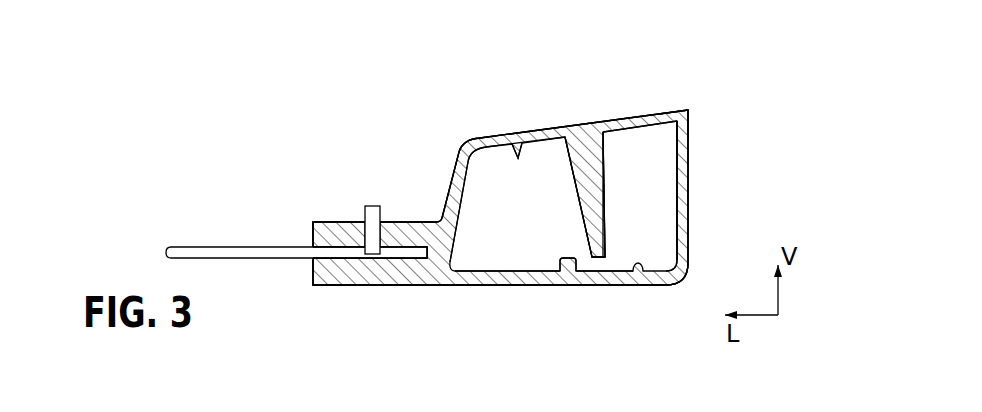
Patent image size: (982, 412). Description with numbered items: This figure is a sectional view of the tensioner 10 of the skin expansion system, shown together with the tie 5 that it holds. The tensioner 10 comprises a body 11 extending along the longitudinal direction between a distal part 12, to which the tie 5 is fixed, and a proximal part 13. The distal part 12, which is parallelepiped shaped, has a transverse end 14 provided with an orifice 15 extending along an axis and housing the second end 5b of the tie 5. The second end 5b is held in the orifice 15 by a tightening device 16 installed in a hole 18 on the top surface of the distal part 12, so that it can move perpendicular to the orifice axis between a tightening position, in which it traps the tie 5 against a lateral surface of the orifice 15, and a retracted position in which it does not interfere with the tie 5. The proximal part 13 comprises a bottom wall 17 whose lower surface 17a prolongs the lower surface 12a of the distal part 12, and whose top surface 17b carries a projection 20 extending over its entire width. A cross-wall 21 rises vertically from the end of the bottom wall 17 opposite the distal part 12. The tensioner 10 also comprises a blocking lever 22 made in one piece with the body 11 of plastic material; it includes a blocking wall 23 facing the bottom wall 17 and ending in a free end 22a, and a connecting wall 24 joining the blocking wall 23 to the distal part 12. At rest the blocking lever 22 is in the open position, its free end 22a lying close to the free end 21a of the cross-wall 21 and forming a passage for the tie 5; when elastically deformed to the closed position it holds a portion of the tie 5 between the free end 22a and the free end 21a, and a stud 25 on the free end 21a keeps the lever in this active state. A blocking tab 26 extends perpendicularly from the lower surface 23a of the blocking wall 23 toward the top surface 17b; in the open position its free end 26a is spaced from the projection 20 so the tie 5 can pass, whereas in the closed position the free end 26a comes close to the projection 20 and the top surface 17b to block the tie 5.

The tie 5 is at (198, 242).
The second end of the tie 5b is at (398, 254).
The tensioner 10 is at (530, 117).
The body 11 is at (480, 308).
The distal part 12 is at (325, 220).
The lower surface of the distal part 12a is at (372, 286).
The proximal part 13 is at (577, 288).
The transverse end 14 is at (312, 278).
The orifice 15 is at (336, 259).
The tightening device 16 is at (374, 206).
The bottom wall 17 is at (518, 288).
The lower surface of the bottom wall 17a is at (621, 286).
The top surface of the bottom wall 17b is at (646, 283).
The hole 18 is at (363, 222).
The projection 20 is at (567, 257).
The cross-wall 21 is at (689, 214).
The free end of the cross-wall 21a is at (671, 136).
The blocking lever 22 is at (582, 127).
The free end of the blocking lever 22a is at (690, 109).
The blocking wall 23 is at (553, 130).
The lower surface of the blocking wall 23a is at (517, 155).
The connecting wall 24 is at (452, 173).
The stud 25 is at (669, 138).
The blocking tab 26 is at (593, 204).
The free end of the blocking tab 26a is at (600, 258).